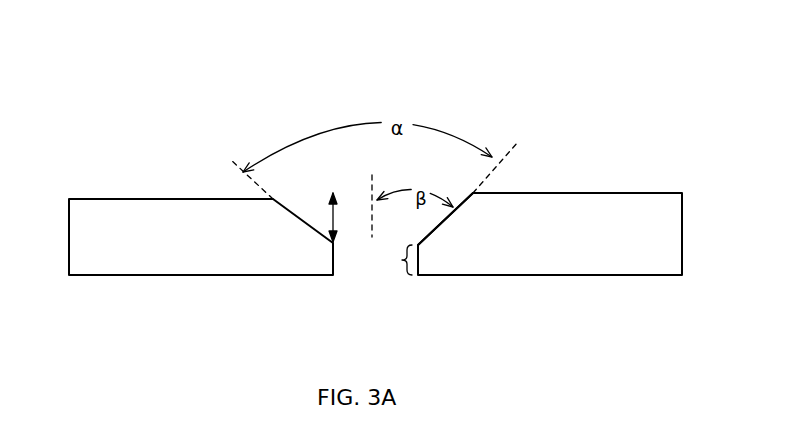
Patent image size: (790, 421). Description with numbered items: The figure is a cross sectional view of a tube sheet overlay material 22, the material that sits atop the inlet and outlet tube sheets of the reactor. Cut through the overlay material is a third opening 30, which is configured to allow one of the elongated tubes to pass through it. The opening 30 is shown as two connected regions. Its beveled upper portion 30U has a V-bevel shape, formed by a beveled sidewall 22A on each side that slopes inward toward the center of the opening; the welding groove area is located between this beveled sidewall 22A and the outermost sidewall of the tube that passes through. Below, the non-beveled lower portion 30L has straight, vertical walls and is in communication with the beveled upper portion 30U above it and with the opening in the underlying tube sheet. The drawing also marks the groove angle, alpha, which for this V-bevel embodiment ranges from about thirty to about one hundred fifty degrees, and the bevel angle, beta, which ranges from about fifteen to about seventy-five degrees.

The tube sheet overlay material 22 is at (375, 234).
The beveled sidewall 22A is at (448, 222).
The third opening 30 is at (372, 150).
The beveled upper portion 30U is at (331, 203).
The non-beveled lower portion 30L is at (385, 260).